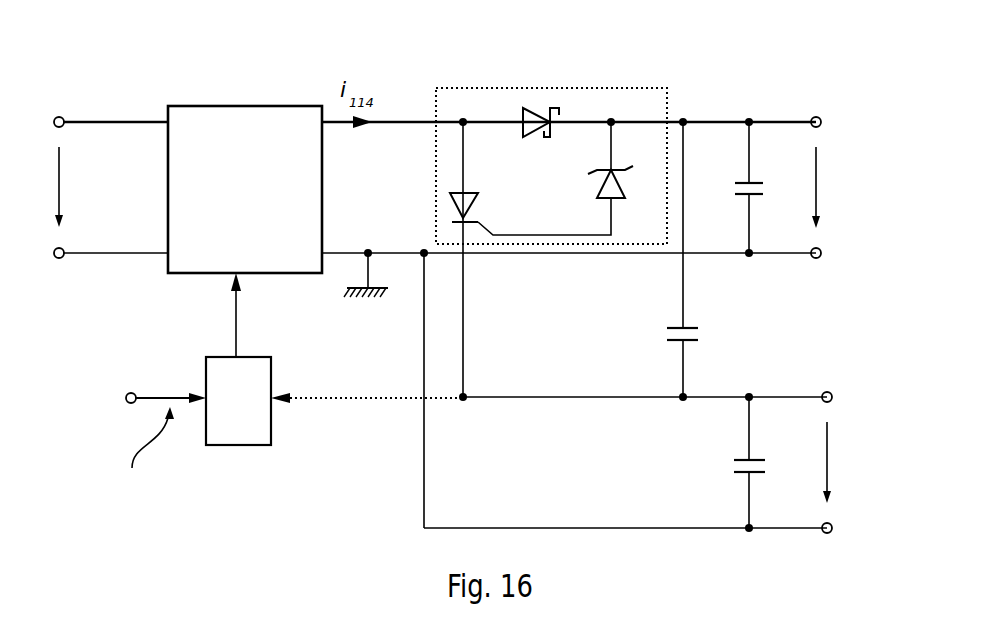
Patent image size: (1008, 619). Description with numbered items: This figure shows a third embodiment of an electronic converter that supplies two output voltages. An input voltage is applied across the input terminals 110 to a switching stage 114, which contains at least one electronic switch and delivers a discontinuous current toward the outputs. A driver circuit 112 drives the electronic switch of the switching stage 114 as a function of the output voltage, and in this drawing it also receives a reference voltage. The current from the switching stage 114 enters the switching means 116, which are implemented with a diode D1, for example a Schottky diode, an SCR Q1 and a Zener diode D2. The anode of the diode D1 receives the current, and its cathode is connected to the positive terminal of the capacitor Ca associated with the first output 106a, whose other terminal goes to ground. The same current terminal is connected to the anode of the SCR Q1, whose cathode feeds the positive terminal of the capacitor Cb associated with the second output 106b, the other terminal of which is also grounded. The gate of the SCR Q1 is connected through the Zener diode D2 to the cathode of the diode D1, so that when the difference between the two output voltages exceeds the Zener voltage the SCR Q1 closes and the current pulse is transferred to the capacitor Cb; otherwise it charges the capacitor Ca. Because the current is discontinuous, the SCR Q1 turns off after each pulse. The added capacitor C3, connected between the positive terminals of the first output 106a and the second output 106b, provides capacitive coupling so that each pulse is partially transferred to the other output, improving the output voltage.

The input terminals 110 is at (61, 97).
The switching stage 114 is at (191, 93).
The switching means 116 is at (445, 75).
The driver circuit 112 is at (238, 433).
The first output 106a is at (816, 90).
The second output 106b is at (827, 365).
The diode D1 is at (542, 95).
The SCR Q1 is at (481, 186).
The Zener diode D2 is at (628, 212).
The capacitor Ca is at (733, 174).
The capacitor Cb is at (733, 450).
The capacitor C3 is at (668, 320).